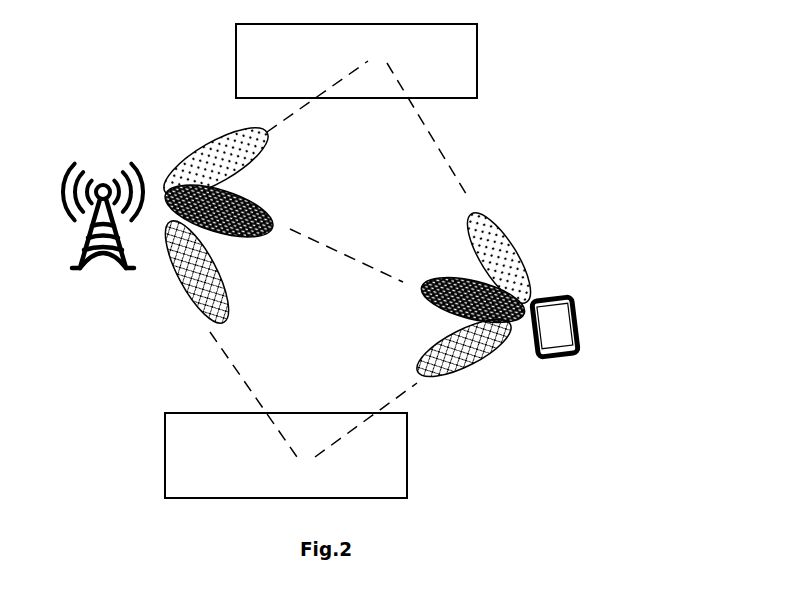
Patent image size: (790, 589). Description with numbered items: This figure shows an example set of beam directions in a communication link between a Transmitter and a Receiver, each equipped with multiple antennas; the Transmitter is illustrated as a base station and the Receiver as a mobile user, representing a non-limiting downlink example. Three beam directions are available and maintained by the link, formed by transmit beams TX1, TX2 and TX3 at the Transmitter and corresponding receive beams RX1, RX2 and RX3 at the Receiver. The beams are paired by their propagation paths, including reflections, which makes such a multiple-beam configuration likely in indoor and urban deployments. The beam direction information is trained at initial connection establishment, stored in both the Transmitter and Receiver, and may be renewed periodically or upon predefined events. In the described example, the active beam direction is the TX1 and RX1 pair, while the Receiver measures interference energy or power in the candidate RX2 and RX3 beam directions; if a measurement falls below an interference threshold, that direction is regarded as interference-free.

The first transmit beam direction TX1 is at (216, 162).
The second transmit beam direction TX2 is at (238, 211).
The third transmit beam direction TX3 is at (220, 272).
The first receive beam direction RX1 is at (512, 257).
The second receive beam direction RX2 is at (466, 284).
The third receive beam direction RX3 is at (446, 347).
The transmitter Transmitter is at (102, 249).
The receiver Receiver is at (558, 355).